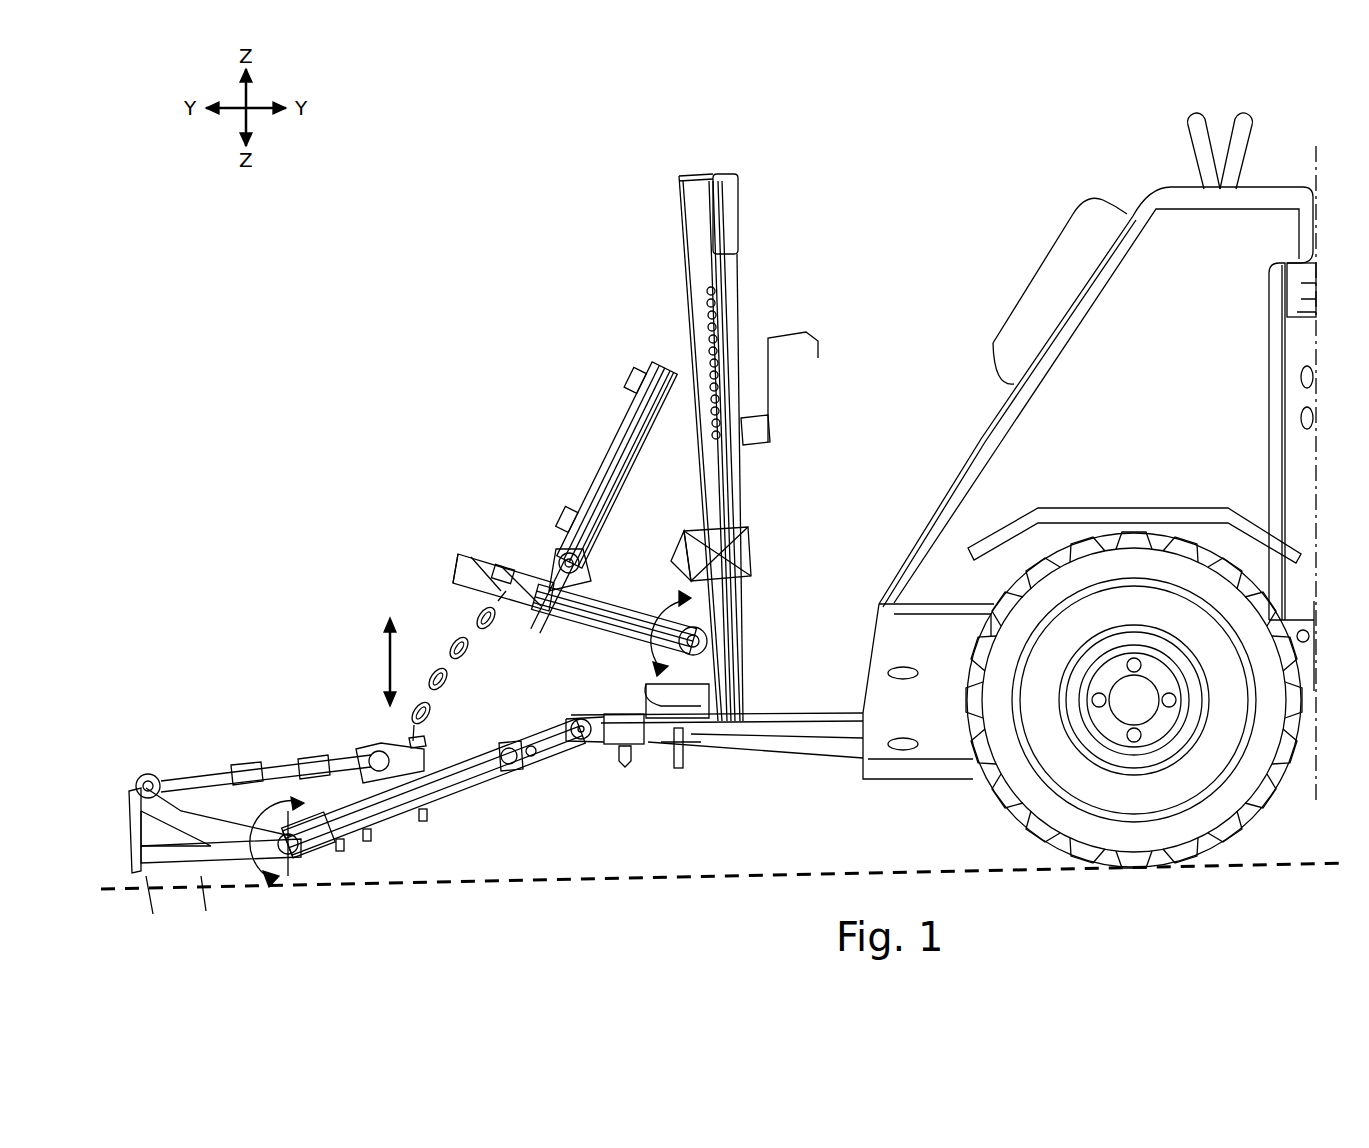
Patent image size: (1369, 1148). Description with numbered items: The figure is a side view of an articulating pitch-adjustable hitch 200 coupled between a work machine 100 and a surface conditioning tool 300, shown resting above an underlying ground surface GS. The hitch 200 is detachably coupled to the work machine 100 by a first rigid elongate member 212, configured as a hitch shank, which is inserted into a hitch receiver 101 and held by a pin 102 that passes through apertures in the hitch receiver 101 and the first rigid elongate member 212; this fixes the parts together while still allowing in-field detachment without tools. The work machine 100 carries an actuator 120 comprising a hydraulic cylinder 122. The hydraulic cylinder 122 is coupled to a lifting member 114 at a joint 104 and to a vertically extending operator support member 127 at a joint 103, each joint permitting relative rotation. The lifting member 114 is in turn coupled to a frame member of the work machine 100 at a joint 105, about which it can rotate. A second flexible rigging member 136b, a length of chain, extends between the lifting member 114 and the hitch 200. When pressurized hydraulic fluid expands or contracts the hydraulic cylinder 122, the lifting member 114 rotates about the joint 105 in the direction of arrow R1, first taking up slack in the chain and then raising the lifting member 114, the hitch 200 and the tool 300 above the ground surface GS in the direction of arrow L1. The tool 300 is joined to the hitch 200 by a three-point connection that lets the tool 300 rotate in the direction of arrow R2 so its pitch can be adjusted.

The work machine 100 is at (1000, 128).
The hitch receiver 101 is at (705, 745).
The pin 102 is at (685, 770).
The joint 103 is at (675, 277).
The joint 104 is at (540, 552).
The joint 105 is at (712, 618).
The lifting member 114 is at (593, 628).
The actuator 120 is at (513, 405).
The hydraulic cylinder 122 is at (622, 410).
The operator support member 127 is at (683, 213).
The second flexible rigging member 136b is at (460, 637).
The articulating pitch-adjustable hitch 200 is at (333, 695).
The first rigid elongate member 212 is at (645, 745).
The surface conditioning tool 300 is at (108, 846).
The arrow L1 is at (361, 659).
The arrow R1 is at (650, 650).
The arrow R2 is at (258, 815).
The ground surface GS is at (527, 872).